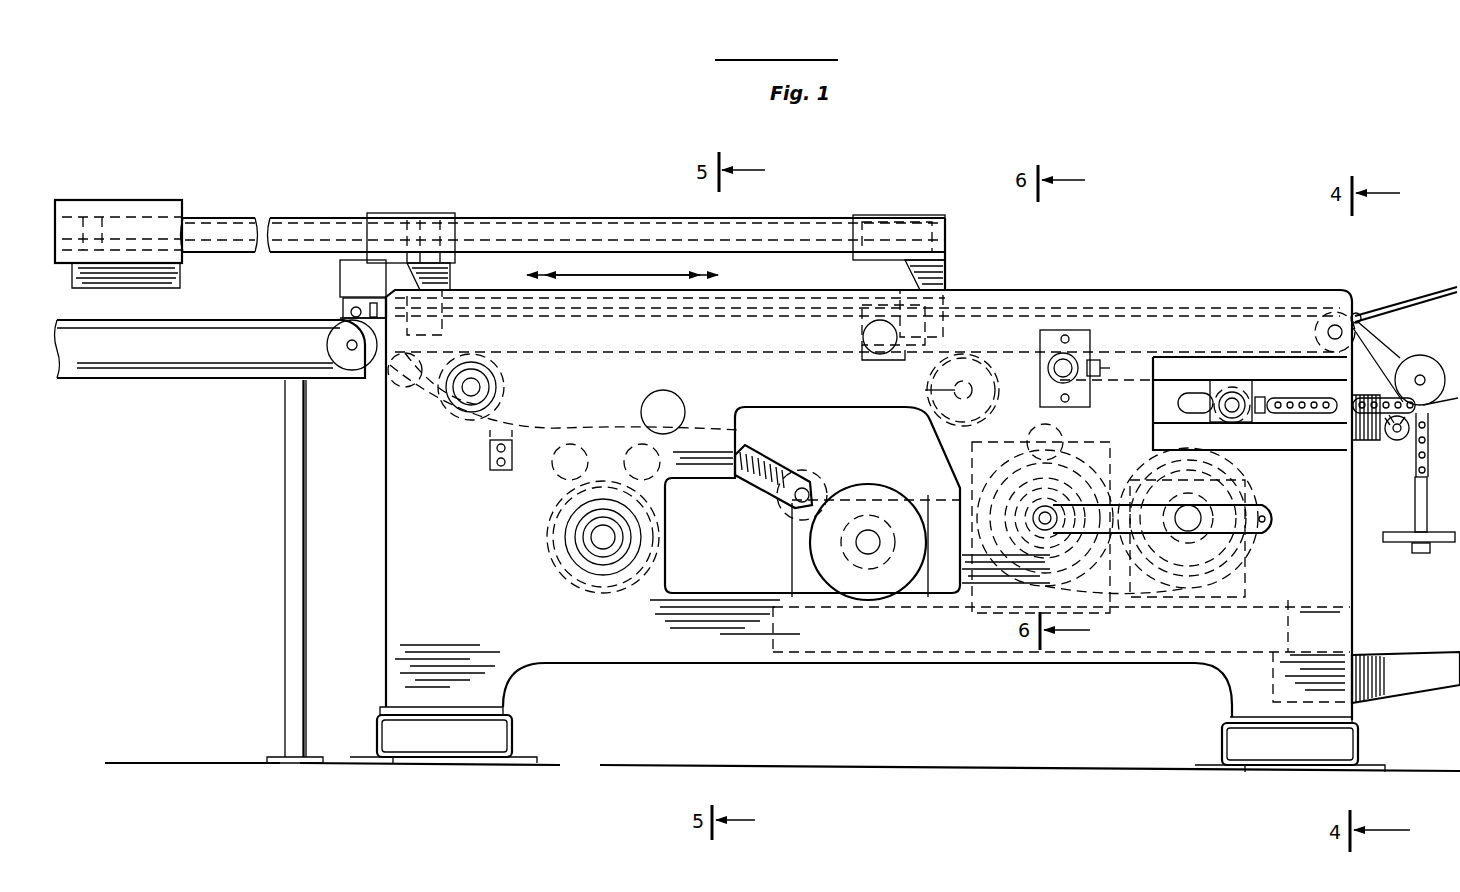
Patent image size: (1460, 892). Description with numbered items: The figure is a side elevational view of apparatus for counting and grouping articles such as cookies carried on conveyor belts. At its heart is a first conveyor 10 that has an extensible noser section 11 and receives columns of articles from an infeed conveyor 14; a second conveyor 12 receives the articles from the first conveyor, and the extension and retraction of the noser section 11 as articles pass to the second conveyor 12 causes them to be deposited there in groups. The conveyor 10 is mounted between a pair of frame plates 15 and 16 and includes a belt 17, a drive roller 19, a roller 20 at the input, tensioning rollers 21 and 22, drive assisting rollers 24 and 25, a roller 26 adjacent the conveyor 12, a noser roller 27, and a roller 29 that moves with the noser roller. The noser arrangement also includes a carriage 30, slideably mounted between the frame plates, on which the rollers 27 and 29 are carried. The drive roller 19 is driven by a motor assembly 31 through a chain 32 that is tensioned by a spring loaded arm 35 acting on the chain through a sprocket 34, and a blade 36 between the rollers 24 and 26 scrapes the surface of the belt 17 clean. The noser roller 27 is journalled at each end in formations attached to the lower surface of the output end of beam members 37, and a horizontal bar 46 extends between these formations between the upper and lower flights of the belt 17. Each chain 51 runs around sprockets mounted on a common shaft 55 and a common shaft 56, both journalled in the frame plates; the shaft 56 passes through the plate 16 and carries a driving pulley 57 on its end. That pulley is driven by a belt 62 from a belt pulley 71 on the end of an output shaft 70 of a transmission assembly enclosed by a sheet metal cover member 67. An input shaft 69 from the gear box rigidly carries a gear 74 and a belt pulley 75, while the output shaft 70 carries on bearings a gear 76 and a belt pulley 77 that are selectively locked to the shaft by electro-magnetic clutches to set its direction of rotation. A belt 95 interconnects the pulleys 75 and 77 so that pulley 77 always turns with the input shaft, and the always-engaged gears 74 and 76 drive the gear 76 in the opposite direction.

The first conveyor 10 is at (1105, 290).
The extensible noser section 11 is at (372, 298).
The second conveyor 12 is at (195, 325).
The infeed conveyor 14 is at (1400, 297).
The frame plate 15 is at (392, 640).
The frame plate 16 is at (1327, 712).
The belt 17 is at (470, 418).
The drive roller 19 is at (545, 560).
The roller 20 is at (1330, 325).
The tensioning roller 21 is at (1065, 353).
The tensioning roller 22 is at (1247, 425).
The drive assisting roller 24 is at (560, 505).
The drive assisting roller 25 is at (615, 585).
The roller 26 is at (425, 398).
The noser roller 27 is at (352, 313).
The roller 29 is at (945, 268).
The carriage 30 is at (518, 255).
The motor assembly 31 is at (860, 595).
The chain 32 is at (700, 580).
The sprocket 34 is at (820, 482).
The spring loaded arm 35 is at (750, 495).
The blade 36 is at (490, 455).
The beam member 37 is at (780, 270).
The horizontal bar 46 is at (372, 322).
The chain 51 is at (933, 357).
The shaft 55 is at (490, 388).
The shaft 56 is at (970, 378).
The driving pulley 57 is at (928, 383).
The belt 62 is at (1040, 505).
The sheet metal cover member 67 is at (1110, 465).
The input shaft 69 is at (1190, 540).
The output shaft 70 is at (1010, 560).
The belt pulley 71 is at (945, 535).
The gear 74 is at (1250, 547).
The belt pulley 75 is at (1300, 622).
The gear 76 is at (1080, 555).
The belt pulley 77 is at (1012, 545).
The belt 95 is at (1135, 623).